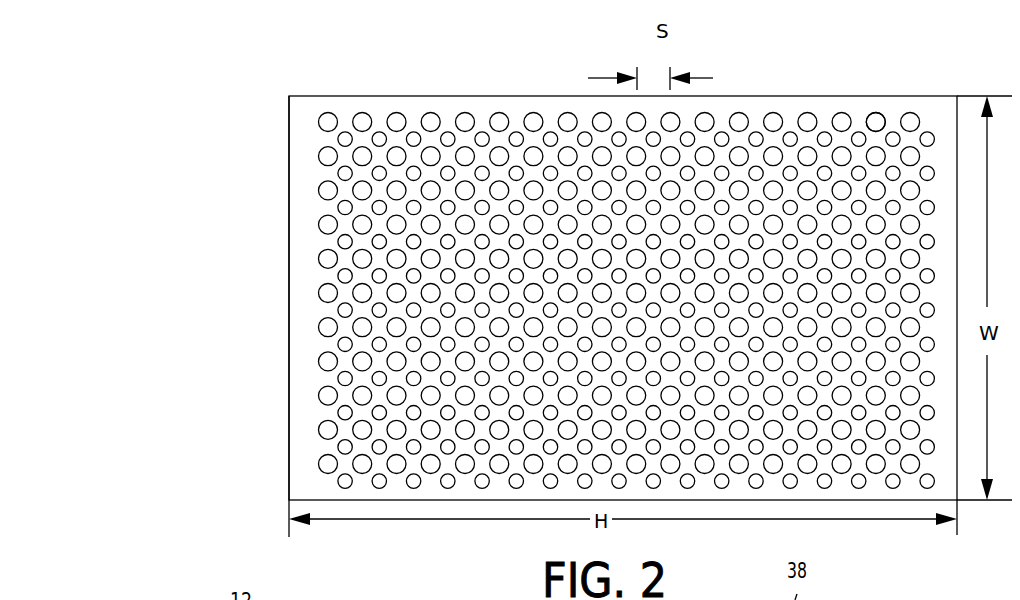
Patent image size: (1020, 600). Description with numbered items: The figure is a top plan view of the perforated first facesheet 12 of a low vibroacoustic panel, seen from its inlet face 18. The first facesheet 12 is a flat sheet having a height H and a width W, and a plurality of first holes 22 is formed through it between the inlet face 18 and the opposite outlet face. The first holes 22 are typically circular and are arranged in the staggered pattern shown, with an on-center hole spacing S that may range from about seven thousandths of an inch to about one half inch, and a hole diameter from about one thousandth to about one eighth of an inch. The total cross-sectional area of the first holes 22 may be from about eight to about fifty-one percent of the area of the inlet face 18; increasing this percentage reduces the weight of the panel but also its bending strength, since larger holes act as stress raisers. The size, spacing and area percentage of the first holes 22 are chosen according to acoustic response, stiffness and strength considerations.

The first facesheet 12 is at (276, 459).
The inlet face 18 is at (299, 209).
The first holes 22 is at (870, 114).